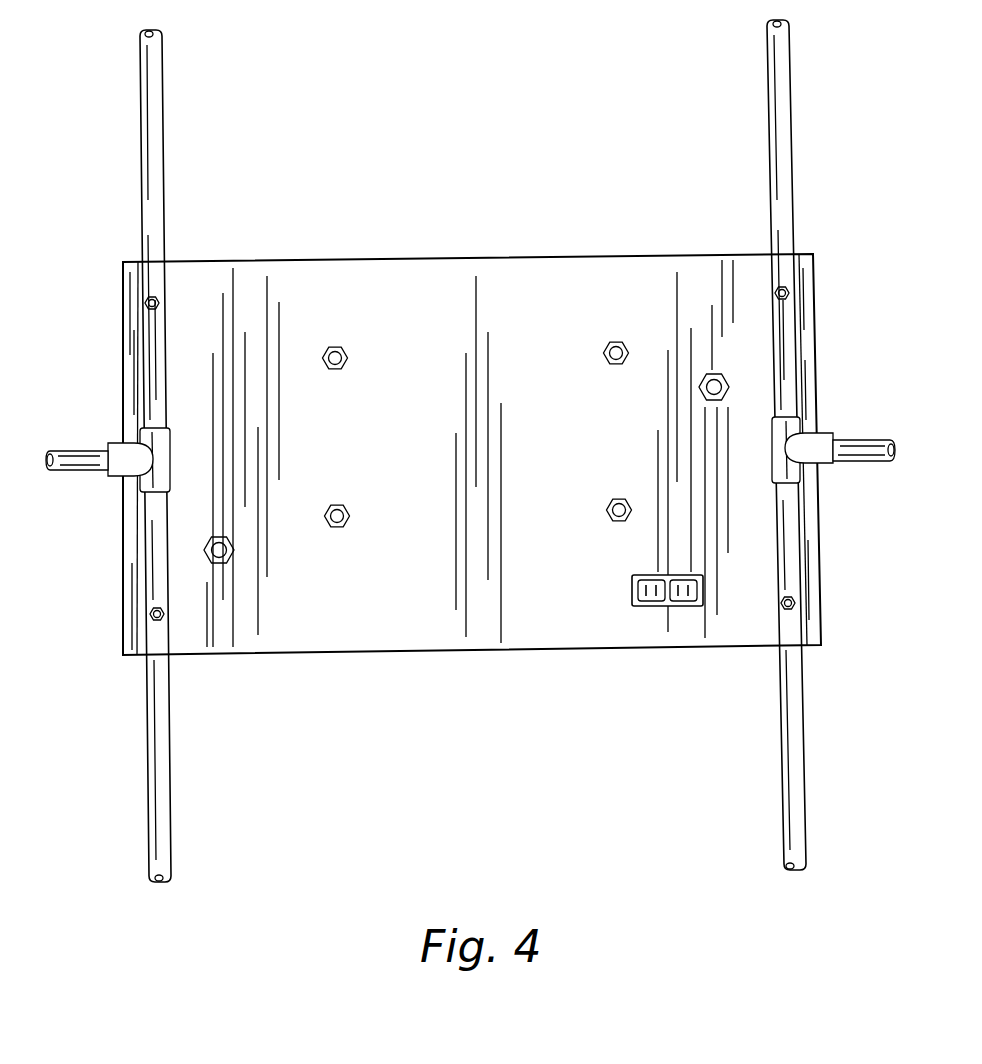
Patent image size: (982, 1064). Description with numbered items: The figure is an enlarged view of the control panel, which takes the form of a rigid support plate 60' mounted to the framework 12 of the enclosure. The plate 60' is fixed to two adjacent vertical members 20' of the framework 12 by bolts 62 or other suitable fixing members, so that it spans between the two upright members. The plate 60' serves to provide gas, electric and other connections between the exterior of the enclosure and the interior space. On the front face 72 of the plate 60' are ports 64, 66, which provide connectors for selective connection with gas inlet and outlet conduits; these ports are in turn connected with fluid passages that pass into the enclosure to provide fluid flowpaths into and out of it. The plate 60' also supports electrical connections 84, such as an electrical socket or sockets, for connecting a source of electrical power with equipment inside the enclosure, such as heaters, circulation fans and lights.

The framework 12 is at (470, 451).
The vertical members 20' is at (469, 451).
The plate 60' is at (472, 418).
The bolts 62 is at (148, 305).
The port 64 is at (234, 550).
The port 66 is at (341, 505).
The front face 72 is at (273, 285).
The electrical connections 84 is at (632, 595).